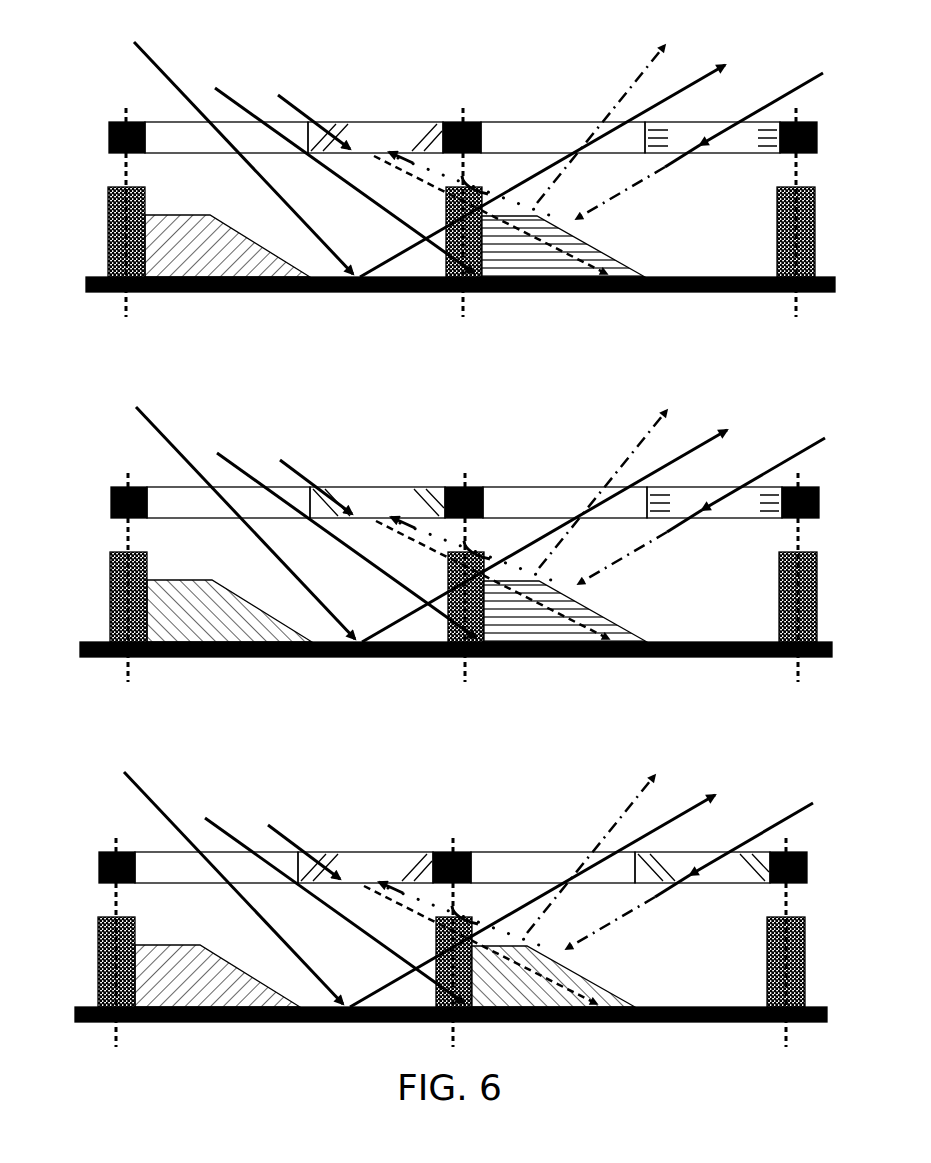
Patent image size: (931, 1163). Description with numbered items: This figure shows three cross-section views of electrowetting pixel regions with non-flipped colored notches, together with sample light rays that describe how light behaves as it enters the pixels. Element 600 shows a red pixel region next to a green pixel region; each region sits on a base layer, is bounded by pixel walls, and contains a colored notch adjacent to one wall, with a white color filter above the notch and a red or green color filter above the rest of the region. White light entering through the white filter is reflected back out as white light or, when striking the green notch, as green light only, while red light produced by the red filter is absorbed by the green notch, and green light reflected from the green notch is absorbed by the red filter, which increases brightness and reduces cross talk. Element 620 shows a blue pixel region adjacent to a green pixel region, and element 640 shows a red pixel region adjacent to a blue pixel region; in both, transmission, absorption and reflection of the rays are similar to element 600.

The element 600 is at (117, 43).
The element 620 is at (80, 395).
The element 640 is at (68, 760).